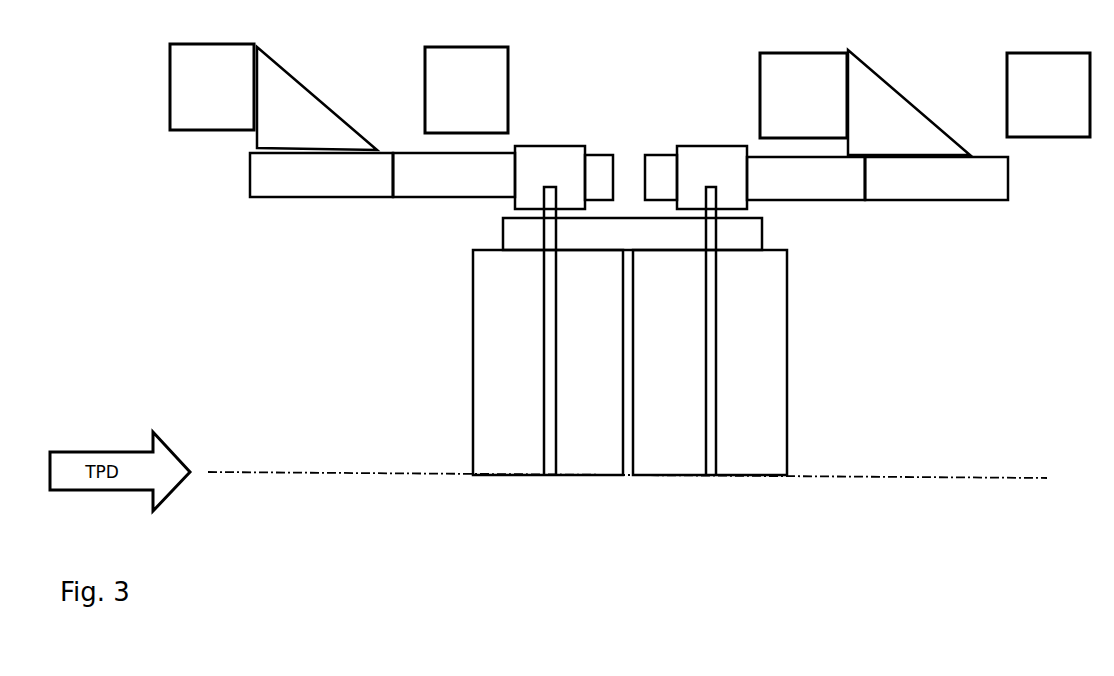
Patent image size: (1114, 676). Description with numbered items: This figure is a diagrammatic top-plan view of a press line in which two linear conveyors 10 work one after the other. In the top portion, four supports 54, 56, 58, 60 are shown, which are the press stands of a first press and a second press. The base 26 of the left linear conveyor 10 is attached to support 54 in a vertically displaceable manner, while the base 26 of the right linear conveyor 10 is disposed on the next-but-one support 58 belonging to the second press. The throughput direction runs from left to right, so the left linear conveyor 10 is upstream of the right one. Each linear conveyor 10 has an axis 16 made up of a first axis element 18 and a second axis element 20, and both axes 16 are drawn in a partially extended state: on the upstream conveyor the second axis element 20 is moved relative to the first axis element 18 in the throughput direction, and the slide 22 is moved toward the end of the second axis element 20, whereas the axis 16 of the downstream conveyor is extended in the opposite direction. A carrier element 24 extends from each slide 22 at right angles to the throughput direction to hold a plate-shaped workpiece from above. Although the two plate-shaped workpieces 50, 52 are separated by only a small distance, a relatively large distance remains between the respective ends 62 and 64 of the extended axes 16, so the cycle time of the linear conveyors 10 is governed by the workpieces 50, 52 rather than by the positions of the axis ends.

The linear conveyor 10 is at (640, 199).
The axis 16 is at (393, 203).
The first axis element 18 is at (316, 177).
The second axis element 20 is at (462, 182).
The slide 22 is at (558, 162).
The carrier element 24 is at (542, 332).
The base 26 is at (300, 120).
The plate-shaped workpiece 50 is at (517, 448).
The plate-shaped workpiece 52 is at (752, 447).
The support 54 is at (199, 100).
The support 56 is at (453, 102).
The support 58 is at (790, 108).
The support 60 is at (1035, 107).
The end of extended axis 62 is at (596, 175).
The end of extended axis 64 is at (664, 177).